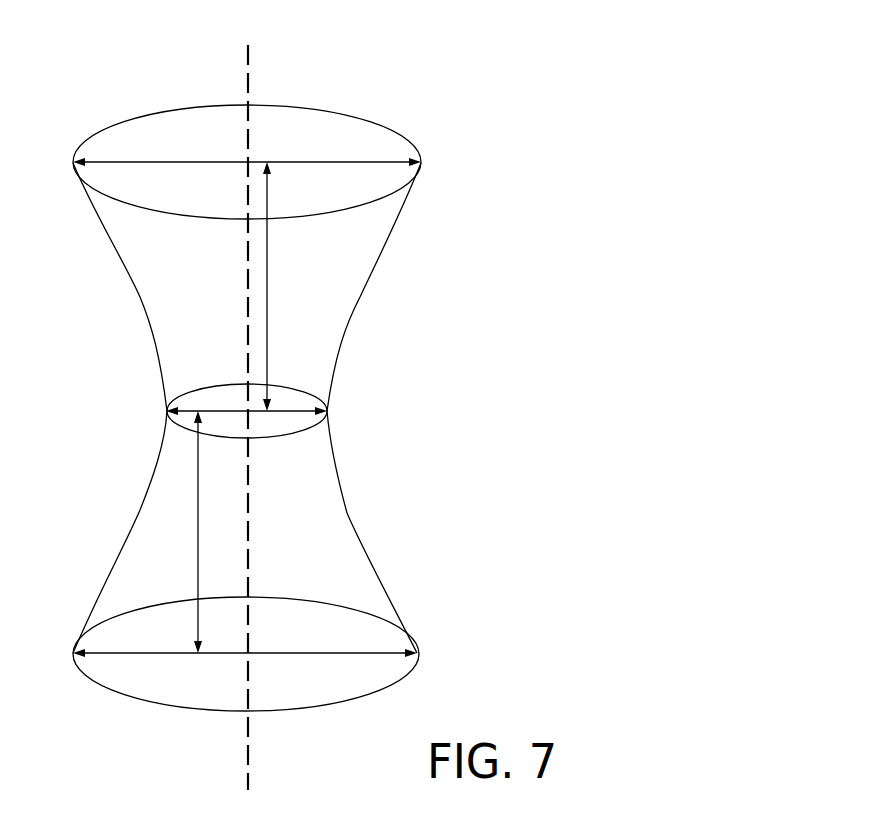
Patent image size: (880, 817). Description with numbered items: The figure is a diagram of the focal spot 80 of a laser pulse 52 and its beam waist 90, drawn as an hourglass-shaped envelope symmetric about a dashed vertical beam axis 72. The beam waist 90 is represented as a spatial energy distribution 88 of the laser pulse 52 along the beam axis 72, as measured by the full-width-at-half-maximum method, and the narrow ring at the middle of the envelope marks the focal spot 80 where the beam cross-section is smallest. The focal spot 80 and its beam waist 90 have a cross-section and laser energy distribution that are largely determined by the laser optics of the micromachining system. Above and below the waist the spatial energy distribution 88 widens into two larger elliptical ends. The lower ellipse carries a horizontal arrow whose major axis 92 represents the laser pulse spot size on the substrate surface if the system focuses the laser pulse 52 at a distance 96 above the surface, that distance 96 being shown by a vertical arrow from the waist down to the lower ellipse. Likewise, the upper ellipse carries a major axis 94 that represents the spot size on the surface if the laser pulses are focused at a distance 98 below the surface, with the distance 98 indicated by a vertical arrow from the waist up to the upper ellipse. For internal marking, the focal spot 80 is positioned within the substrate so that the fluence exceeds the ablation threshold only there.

The laser pulse 52 is at (388, 121).
The beam axis 72 is at (250, 62).
The focal spot 80 is at (307, 431).
The spatial energy distribution 88 is at (385, 245).
The beam waist 90 is at (252, 412).
The major axis 92 is at (312, 653).
The major axis 94 is at (383, 163).
The distance above the surface 96 is at (198, 508).
The distance below the surface 98 is at (267, 275).